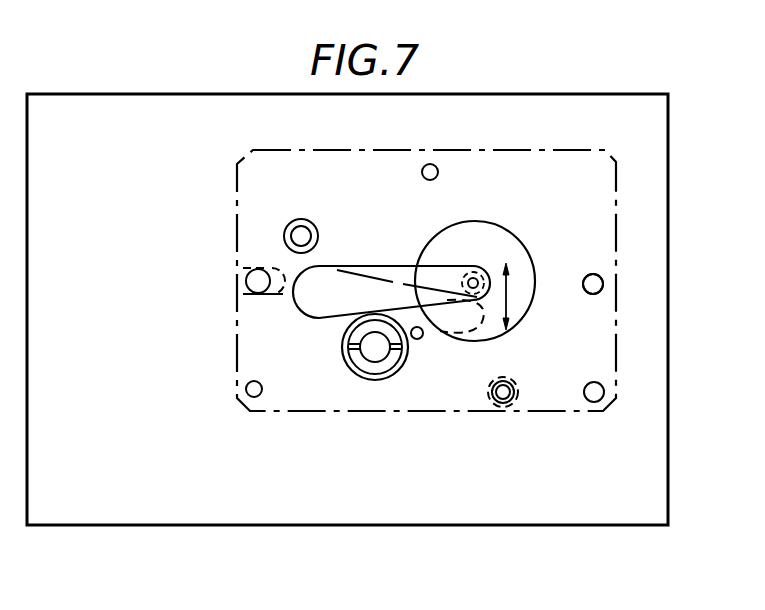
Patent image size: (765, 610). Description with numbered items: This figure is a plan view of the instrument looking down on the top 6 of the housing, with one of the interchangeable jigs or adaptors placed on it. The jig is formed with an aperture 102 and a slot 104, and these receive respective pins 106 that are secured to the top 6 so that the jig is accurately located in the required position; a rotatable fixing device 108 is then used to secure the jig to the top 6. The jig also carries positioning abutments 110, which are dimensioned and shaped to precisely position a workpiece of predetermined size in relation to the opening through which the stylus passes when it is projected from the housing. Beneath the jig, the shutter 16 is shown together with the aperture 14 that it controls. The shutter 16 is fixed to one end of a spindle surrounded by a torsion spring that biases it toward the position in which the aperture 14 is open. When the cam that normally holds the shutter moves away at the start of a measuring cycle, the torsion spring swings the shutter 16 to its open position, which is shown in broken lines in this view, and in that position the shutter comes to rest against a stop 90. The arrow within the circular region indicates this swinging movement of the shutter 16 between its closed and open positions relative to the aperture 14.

The top of the housing 6 is at (577, 105).
The positioning abutments 110 is at (333, 146).
The slot 104 is at (242, 264).
The pins 106 is at (252, 282).
The aperture 102 is at (595, 272).
The shutter 16 is at (383, 266).
The aperture 14 is at (461, 264).
The rotatable fixing device 108 is at (370, 348).
The stop 90 is at (422, 338).